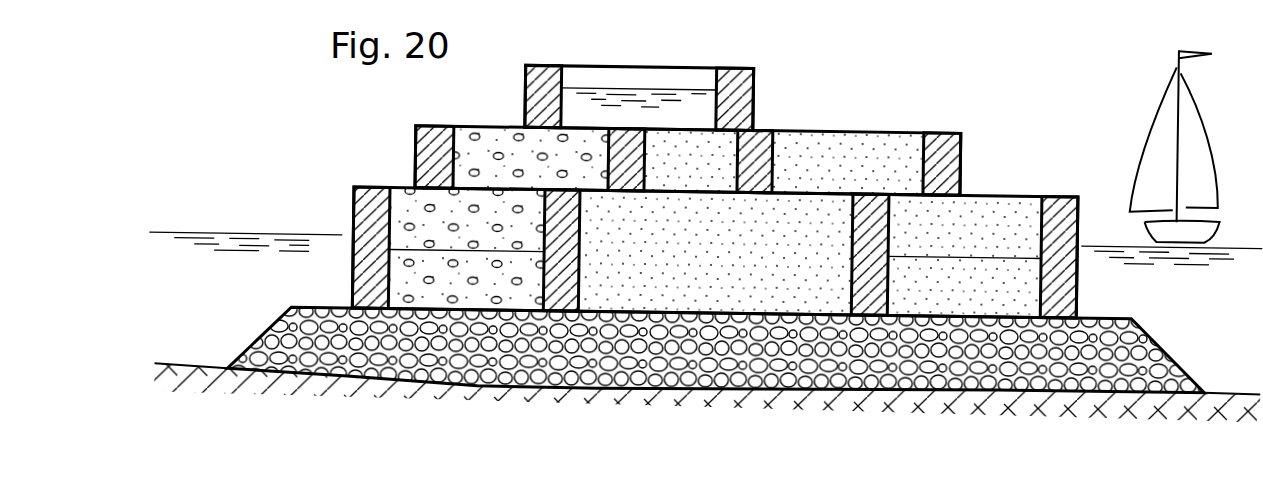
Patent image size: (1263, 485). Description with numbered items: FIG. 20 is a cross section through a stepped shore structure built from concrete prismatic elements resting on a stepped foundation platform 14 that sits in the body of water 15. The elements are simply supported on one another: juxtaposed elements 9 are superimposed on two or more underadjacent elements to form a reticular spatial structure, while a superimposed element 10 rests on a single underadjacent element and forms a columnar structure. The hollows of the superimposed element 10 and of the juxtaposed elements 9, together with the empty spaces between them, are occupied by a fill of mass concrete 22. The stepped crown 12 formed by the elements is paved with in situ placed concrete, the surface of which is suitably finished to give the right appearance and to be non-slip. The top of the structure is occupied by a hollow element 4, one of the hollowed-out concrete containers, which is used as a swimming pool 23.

The hollow element 4 is at (684, 70).
The juxtaposed elements 9 is at (542, 61).
The superimposed element 10 is at (1062, 200).
The stepped crown 12 is at (398, 182).
The stepped foundation platform 14 is at (590, 347).
The body of water 15 is at (247, 244).
The fill of mass concrete 22 is at (778, 294).
The swimming pool 23 is at (622, 73).